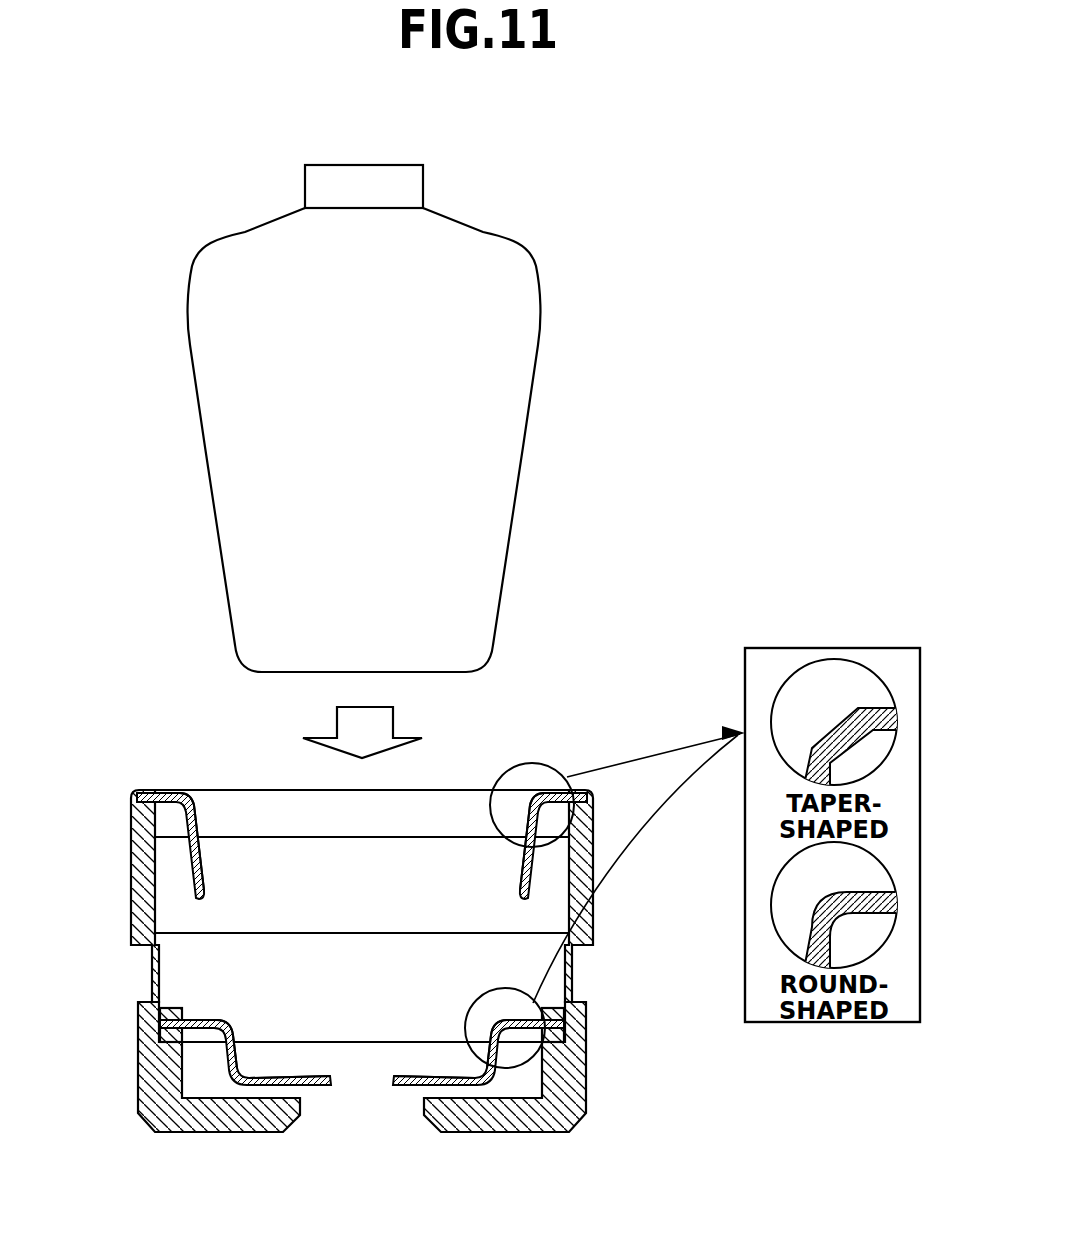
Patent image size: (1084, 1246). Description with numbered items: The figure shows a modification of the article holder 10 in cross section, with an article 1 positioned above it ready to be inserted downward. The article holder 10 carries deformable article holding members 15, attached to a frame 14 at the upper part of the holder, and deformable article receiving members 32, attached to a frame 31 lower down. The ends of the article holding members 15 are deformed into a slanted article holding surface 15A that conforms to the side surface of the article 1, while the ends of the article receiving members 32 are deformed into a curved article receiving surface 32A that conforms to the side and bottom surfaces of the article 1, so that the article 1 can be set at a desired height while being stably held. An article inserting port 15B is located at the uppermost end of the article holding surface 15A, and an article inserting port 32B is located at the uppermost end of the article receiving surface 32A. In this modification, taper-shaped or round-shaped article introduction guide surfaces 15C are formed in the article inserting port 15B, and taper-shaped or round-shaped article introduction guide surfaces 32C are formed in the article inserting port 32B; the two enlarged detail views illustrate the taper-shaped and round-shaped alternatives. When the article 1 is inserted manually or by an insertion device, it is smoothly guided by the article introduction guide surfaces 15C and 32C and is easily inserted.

The article 1 is at (188, 298).
The article holder 10 is at (148, 781).
The frame 14 is at (132, 816).
The article holding member 15 is at (196, 830).
The article holding surface 15A is at (204, 868).
The article inserting port 15B is at (189, 792).
The article introduction guide surface 15C is at (192, 796).
The frame 31 is at (170, 1006).
The article receiving member 32 is at (203, 1018).
The article receiving surface 32A is at (291, 1073).
The article inserting port 32B is at (223, 1019).
The article introduction guide surface 32C is at (234, 1022).